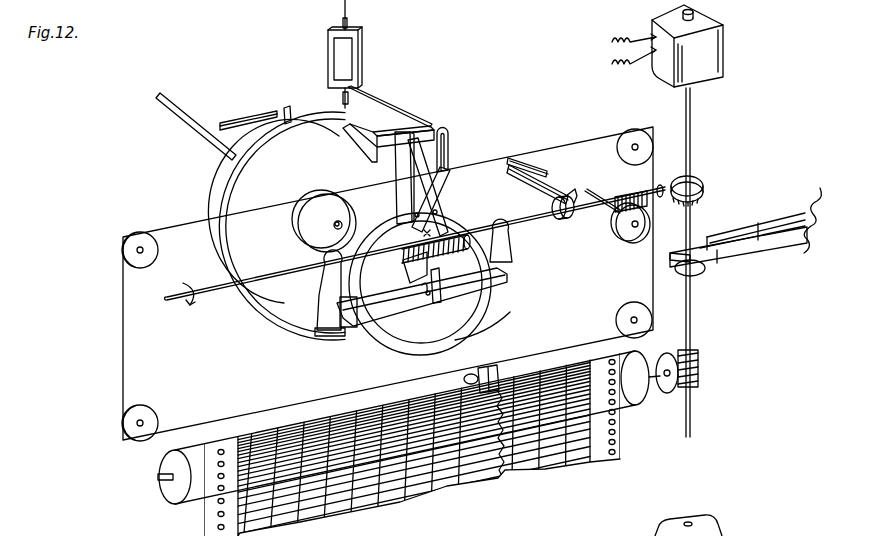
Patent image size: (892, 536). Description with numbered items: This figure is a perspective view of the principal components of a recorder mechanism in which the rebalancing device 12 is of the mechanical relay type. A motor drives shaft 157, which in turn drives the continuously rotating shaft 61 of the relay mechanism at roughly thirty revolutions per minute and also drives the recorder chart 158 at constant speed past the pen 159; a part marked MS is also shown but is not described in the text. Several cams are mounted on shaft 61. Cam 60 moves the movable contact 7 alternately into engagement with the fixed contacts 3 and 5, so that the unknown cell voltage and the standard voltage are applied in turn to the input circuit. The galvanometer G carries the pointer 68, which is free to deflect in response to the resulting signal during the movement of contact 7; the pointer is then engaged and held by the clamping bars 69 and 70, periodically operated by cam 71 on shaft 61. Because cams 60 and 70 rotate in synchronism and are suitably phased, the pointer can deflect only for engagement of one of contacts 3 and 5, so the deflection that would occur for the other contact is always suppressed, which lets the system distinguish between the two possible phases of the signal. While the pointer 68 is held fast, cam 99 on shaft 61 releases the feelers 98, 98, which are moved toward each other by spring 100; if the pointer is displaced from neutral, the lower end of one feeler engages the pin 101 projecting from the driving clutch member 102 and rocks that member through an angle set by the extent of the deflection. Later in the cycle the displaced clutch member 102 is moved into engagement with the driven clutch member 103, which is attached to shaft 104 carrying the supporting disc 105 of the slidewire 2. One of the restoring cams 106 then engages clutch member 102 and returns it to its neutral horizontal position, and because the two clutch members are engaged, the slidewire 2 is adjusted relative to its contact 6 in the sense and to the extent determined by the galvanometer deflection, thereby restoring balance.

The electromagnet G is at (361, 50).
The slidewire 2 is at (299, 118).
The contact 3 is at (538, 172).
The contact 5 is at (526, 178).
The contact 6 is at (250, 122).
The contact 7 is at (564, 184).
The rebalancing device 12 is at (706, 80).
The cam 60 is at (566, 217).
The shaft 61 is at (209, 292).
The galvanometer pointer 68 is at (380, 111).
The clamping bar 69 is at (435, 127).
The clamping bar 70 is at (449, 147).
The cam 71 is at (428, 237).
The feelers 98 is at (403, 167).
The cam 99 is at (441, 232).
The spring 100 is at (453, 236).
The pin 101 is at (433, 303).
The driving clutch member 102 is at (390, 300).
The driven clutch member 103 is at (462, 335).
The shaft 104 is at (191, 127).
The supporting disc 105 is at (246, 170).
The restoring cams 106 is at (319, 294).
The shaft 157 is at (692, 335).
The recorder chart 158 is at (622, 412).
The pen 159 is at (500, 368).
The rack MS is at (731, 256).